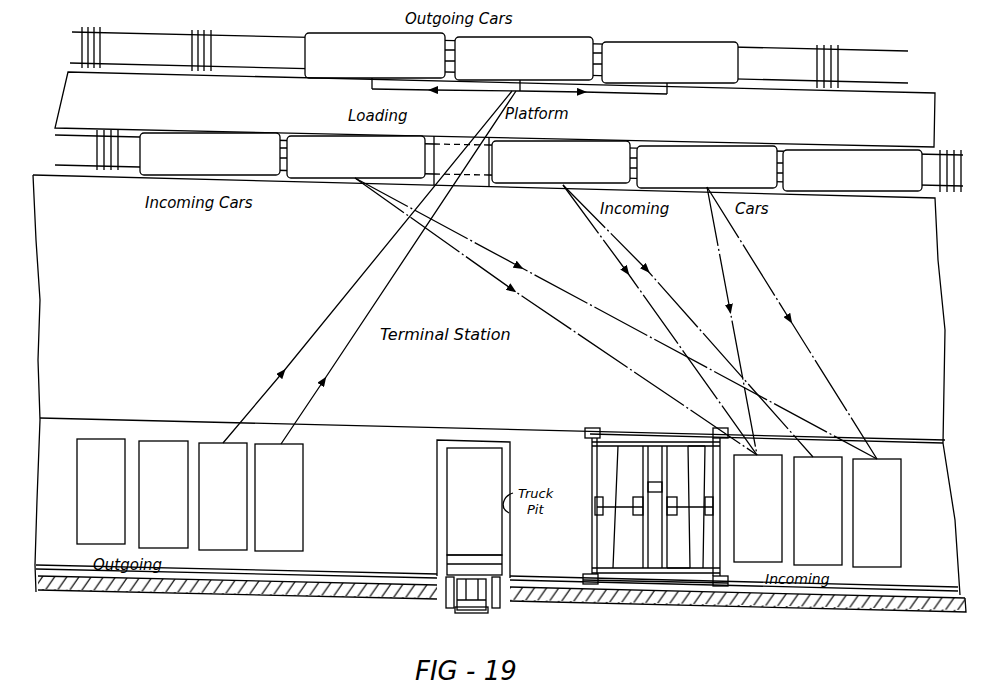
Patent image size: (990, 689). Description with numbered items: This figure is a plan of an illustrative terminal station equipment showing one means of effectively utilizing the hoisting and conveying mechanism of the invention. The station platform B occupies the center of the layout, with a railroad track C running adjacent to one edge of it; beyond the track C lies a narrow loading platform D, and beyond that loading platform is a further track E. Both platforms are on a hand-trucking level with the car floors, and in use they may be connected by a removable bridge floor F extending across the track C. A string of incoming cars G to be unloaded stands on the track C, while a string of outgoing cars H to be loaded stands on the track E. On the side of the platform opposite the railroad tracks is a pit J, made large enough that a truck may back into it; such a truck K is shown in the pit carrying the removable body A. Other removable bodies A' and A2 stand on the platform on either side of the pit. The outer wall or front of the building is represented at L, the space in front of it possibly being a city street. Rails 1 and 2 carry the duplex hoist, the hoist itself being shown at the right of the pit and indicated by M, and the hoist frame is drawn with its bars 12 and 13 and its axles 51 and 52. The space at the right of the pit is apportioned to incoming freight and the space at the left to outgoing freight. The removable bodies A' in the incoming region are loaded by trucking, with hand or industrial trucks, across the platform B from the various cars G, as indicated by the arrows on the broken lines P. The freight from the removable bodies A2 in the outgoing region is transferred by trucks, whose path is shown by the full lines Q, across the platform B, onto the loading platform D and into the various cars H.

The track E is at (479, 57).
The loading platform D is at (495, 109).
The railroad track C is at (503, 161).
The station platform B is at (496, 385).
The string of outgoing cars H is at (521, 58).
The string of incoming cars G is at (531, 162).
The removable bridge floor F is at (461, 161).
The full lines Q is at (445, 261).
The broken lines P is at (616, 318).
The removable body A is at (474, 511).
The removable bodies A' is at (817, 511).
The removable bodies A2 is at (190, 495).
The pit J is at (437, 520).
The truck K is at (497, 607).
The outer wall L is at (703, 598).
The duplex hoist M is at (655, 498).
The rail 1 is at (392, 572).
The rail 2 is at (393, 427).
The lower bar 12 is at (677, 569).
The upper bar 13 is at (685, 444).
The left axle 51 is at (632, 513).
The right axle 52 is at (705, 500).